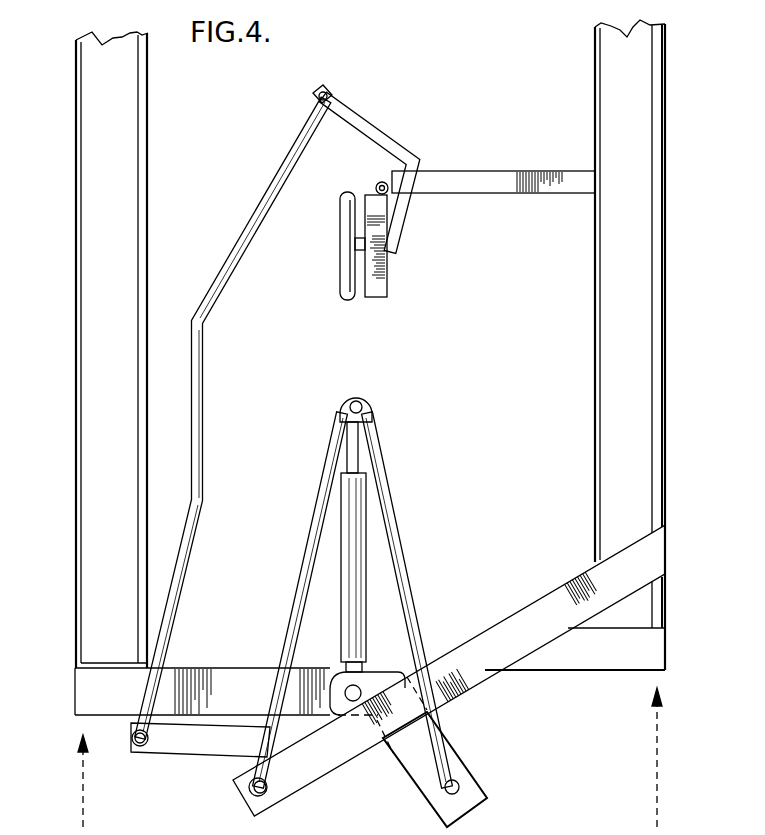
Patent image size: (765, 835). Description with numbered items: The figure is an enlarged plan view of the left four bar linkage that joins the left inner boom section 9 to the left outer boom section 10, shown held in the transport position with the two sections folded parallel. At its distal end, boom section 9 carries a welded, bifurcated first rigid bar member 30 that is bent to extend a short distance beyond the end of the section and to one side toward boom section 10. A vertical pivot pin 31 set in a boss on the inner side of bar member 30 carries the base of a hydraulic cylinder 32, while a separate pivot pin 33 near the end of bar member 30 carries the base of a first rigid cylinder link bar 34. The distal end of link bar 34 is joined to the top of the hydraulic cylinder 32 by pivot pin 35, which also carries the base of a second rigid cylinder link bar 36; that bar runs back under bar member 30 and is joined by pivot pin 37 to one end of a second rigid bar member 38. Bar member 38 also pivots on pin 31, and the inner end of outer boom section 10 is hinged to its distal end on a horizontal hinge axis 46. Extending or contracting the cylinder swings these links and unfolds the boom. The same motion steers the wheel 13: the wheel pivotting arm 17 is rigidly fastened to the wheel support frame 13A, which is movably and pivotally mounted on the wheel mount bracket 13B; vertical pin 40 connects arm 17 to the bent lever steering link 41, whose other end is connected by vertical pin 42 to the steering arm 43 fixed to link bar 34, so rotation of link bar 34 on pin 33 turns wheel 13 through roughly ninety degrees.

The left inner boom section 9 is at (597, 236).
The left outer boom section 10 is at (148, 190).
The wheel 13 is at (340, 298).
The wheel support frame 13A is at (388, 284).
The wheel mount bracket 13B is at (478, 176).
The wheel pivotting arm 17 is at (380, 137).
The first rigid bar member 30 is at (618, 671).
The vertical pivot pin 31 is at (382, 672).
The hydraulic cylinder 32 is at (368, 576).
The pivot pin 33 is at (264, 794).
The first rigid cylinder link bar 34 is at (310, 556).
The pivot pin 35 is at (370, 398).
The second rigid cylinder link bar 36 is at (403, 536).
The pivot pin 37 is at (460, 784).
The second rigid bar member 38 is at (430, 806).
The vertical pin 40 is at (328, 90).
The bent lever steering link 41 is at (203, 375).
The vertical pin 42 is at (136, 742).
The steering arm 43 is at (205, 757).
The hinge axis 46 is at (78, 666).